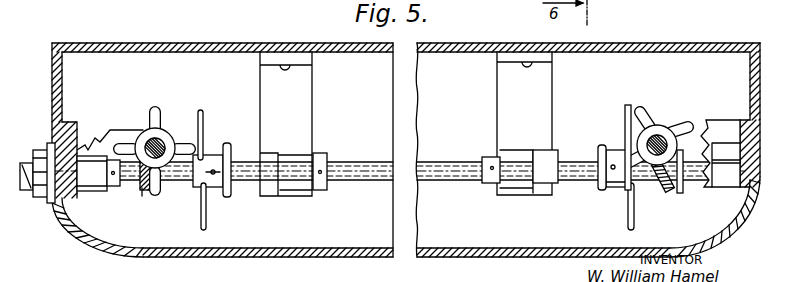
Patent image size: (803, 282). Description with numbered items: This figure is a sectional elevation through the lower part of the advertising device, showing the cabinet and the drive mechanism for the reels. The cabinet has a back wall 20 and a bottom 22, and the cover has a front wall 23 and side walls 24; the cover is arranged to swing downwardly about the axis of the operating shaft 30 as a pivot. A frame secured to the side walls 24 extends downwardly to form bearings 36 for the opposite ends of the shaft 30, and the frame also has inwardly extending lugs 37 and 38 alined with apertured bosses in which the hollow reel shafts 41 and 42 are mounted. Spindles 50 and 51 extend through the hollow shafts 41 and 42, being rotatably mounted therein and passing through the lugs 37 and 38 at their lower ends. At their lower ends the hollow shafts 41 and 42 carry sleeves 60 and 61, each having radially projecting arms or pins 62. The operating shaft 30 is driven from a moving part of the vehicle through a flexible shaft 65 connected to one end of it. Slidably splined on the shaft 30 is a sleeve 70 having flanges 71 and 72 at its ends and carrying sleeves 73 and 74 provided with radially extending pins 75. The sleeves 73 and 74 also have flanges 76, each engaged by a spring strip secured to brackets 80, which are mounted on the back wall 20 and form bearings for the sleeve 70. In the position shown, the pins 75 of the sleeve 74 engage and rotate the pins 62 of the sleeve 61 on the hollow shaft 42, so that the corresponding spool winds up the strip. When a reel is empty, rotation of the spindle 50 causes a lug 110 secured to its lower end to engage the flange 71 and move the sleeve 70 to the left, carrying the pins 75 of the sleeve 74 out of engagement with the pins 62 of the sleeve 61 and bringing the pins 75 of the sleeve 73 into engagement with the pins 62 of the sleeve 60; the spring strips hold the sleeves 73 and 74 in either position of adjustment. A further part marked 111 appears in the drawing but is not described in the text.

The back wall 20 is at (236, 43).
The bottom 22 is at (142, 1).
The front wall 23 is at (298, 258).
The side walls 24 is at (63, 97).
The operating shaft 30 is at (130, 181).
The bearings 36 is at (76, 196).
The lug 37 is at (112, 130).
The lug 38 is at (711, 122).
The hollow reel shaft 41 is at (142, 131).
The hollow reel shaft 42 is at (646, 140).
The spindle 50 is at (164, 139).
The spindle 51 is at (648, 140).
The sleeve 60 is at (173, 134).
The sleeve 61 is at (661, 137).
The arms or pins 62 is at (150, 110).
The flexible shaft 65 is at (27, 191).
The sleeve 70 is at (349, 162).
The flange 71 is at (142, 191).
The flange 72 is at (681, 194).
The sleeve 73 is at (212, 153).
The sleeve 74 is at (614, 190).
The pins 75 is at (204, 117).
The flanges 76 is at (227, 198).
The brackets 80 is at (313, 100).
The lug 110 is at (168, 190).
The arm 111 is at (662, 186).